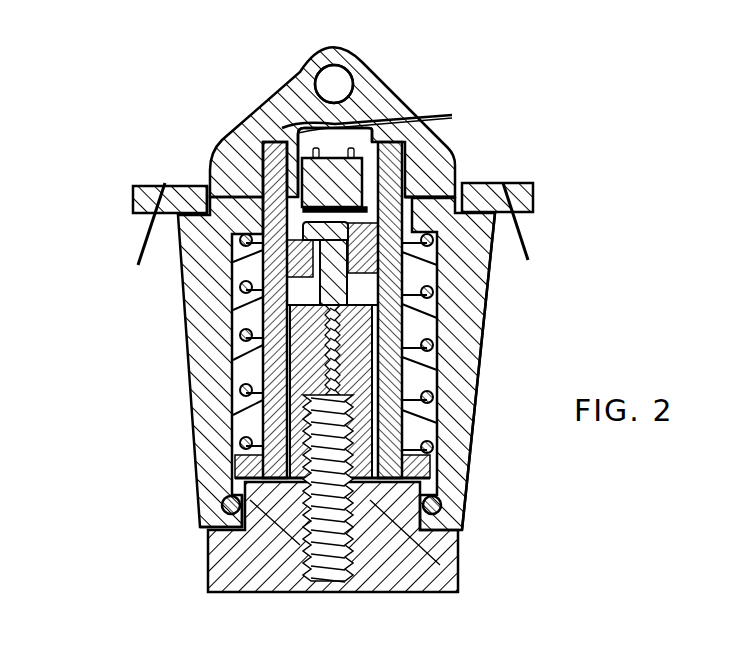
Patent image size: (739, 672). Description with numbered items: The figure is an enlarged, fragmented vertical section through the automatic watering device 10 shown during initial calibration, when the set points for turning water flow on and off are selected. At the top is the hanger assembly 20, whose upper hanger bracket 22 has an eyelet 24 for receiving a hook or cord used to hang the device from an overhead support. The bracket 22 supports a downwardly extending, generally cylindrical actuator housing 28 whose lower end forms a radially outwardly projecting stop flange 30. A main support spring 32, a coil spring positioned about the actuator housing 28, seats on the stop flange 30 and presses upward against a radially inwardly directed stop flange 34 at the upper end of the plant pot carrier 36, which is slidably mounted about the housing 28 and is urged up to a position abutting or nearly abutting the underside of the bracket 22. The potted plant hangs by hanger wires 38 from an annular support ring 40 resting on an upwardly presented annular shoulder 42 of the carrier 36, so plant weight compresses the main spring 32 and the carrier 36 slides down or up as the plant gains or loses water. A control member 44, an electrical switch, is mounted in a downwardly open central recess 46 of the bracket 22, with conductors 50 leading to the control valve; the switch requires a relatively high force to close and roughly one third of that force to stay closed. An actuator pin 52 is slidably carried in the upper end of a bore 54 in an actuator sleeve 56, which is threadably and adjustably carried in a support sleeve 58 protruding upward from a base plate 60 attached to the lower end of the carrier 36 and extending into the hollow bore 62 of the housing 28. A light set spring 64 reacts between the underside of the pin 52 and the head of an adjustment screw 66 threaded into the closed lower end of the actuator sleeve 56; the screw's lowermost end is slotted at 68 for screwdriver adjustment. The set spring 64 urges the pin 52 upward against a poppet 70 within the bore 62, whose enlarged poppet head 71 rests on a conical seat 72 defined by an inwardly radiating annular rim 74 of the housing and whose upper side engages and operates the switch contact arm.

The watering device 10 is at (96, 347).
The hanger assembly 20 is at (402, 58).
The upper hanger bracket 22 is at (262, 98).
The eyelet 24 is at (334, 64).
The actuator housing 28 is at (193, 410).
The stop flange 30 is at (230, 475).
The main support spring 32 is at (440, 330).
The stop flange 34 is at (432, 203).
The plant pot carrier 36 is at (480, 370).
The hanger wires 38 is at (141, 240).
The annular support ring 40 is at (155, 187).
The annular shoulder 42 is at (197, 184).
The control member 44 is at (300, 172).
The central recess 46 is at (342, 136).
The conductors 50 is at (452, 115).
The actuator pin 52 is at (320, 348).
The bore 54 is at (305, 370).
The actuator sleeve 56 is at (435, 448).
The support sleeve 58 is at (240, 432).
The base plate 60 is at (223, 585).
The hollow bore 62 is at (415, 277).
The set spring 64 is at (372, 438).
The adjustment screw 66 is at (320, 495).
The slot 68 is at (310, 530).
The poppet 70 is at (330, 276).
The poppet head 71 is at (405, 172).
The conical seat 72 is at (284, 198).
The annular rim 74 is at (290, 255).